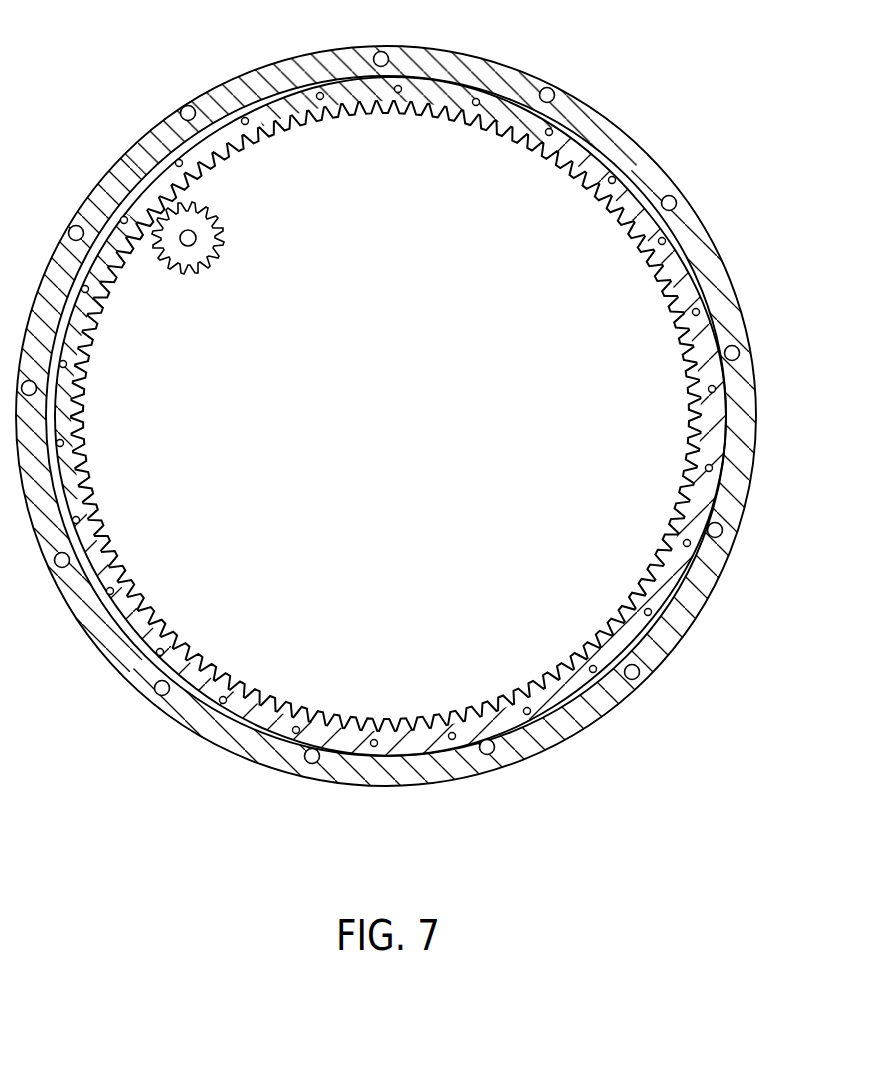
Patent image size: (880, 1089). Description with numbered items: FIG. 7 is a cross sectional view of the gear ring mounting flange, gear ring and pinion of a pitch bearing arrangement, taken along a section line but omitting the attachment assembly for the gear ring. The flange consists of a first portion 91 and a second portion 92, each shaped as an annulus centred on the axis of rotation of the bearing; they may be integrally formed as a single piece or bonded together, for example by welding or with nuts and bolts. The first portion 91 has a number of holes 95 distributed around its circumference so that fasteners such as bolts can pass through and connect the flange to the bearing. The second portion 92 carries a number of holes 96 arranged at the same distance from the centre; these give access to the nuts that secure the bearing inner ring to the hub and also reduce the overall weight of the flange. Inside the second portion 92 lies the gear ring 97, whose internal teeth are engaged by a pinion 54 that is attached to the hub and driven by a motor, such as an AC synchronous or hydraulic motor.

The first portion 91 is at (278, 58).
The second portion 92 is at (597, 143).
The pinion 54 is at (202, 245).
The holes 95 is at (54, 574).
The holes 96 is at (532, 722).
The gear ring 97 is at (84, 432).